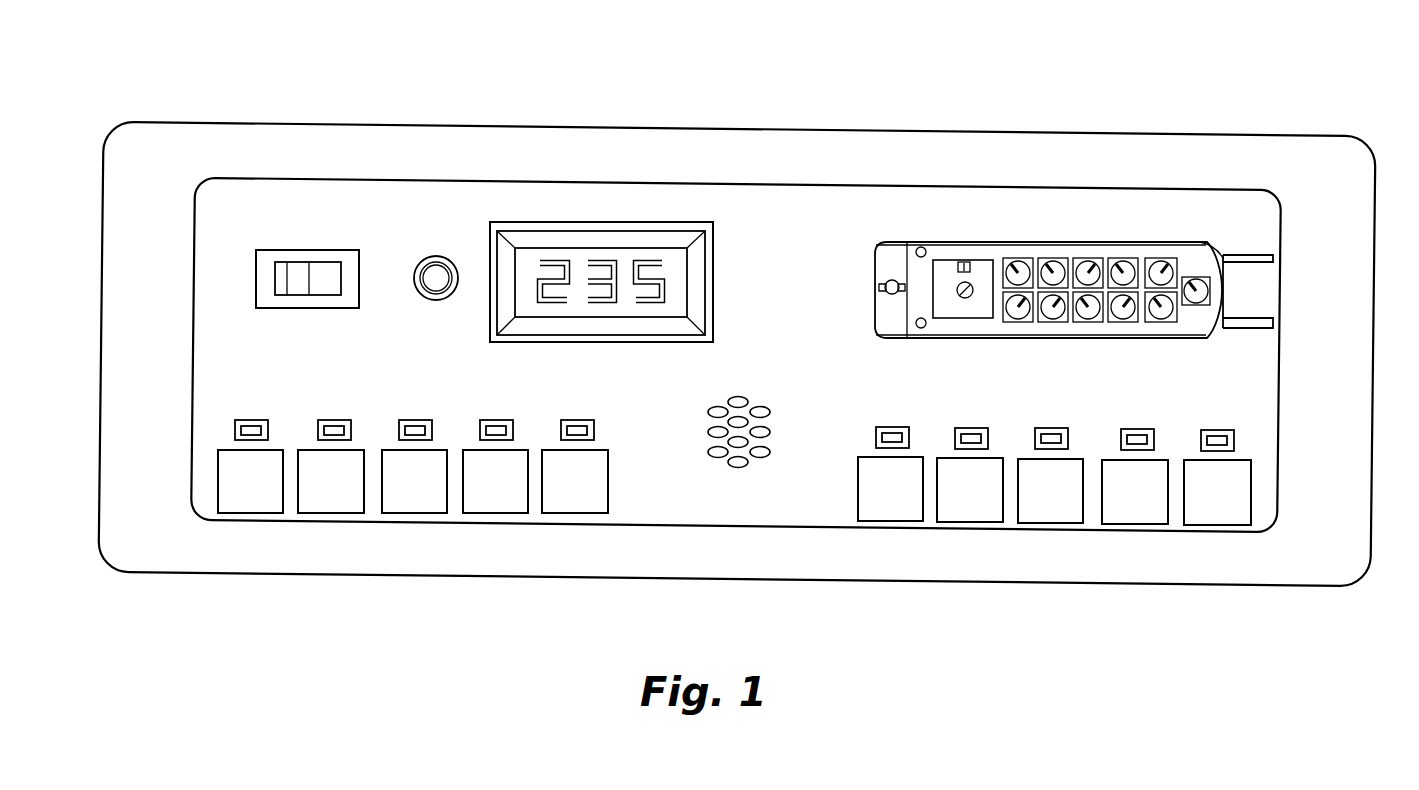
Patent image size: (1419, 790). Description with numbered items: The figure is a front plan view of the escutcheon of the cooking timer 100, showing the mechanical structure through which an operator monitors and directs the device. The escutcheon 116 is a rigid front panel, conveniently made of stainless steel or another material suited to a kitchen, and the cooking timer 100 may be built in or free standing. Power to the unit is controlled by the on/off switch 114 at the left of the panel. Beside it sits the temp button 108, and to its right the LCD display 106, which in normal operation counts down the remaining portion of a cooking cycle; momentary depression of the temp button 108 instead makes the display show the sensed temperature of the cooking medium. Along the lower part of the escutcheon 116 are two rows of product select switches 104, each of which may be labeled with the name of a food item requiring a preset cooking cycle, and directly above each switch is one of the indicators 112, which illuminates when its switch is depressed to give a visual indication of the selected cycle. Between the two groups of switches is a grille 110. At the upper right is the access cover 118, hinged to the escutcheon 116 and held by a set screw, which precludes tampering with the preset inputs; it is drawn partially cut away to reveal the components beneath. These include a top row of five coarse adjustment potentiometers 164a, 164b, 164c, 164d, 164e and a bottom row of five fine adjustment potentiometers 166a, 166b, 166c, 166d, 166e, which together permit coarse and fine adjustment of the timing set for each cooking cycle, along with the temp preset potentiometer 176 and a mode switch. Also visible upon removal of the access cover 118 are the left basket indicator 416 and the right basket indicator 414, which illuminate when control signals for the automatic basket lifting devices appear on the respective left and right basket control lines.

The cooking timer 100 is at (180, 637).
The product select switches 104 is at (414, 495).
The LCD display 106 is at (618, 267).
The temp button 108 is at (437, 277).
The speaker grille 110 is at (728, 463).
The indicators 112 is at (577, 423).
The on/off switch 114 is at (293, 273).
The escutcheon 116 is at (785, 305).
The access cover 118 is at (1207, 250).
The coarse adjustment potentiometer 164a is at (1015, 265).
The coarse adjustment potentiometer 164b is at (1048, 262).
The coarse adjustment potentiometer 164c is at (1094, 262).
The coarse adjustment potentiometer 164d is at (1119, 262).
The coarse adjustment potentiometer 164e is at (1165, 262).
The fine adjustment potentiometer 166a is at (1018, 318).
The fine adjustment potentiometer 166b is at (1053, 314).
The fine adjustment potentiometer 166c is at (1088, 314).
The fine adjustment potentiometer 166d is at (1122, 314).
The fine adjustment potentiometer 166e is at (1162, 314).
The temp preset potentiometer 176 is at (1200, 305).
The right basket indicator 414 is at (921, 328).
The left basket indicator 416 is at (922, 247).